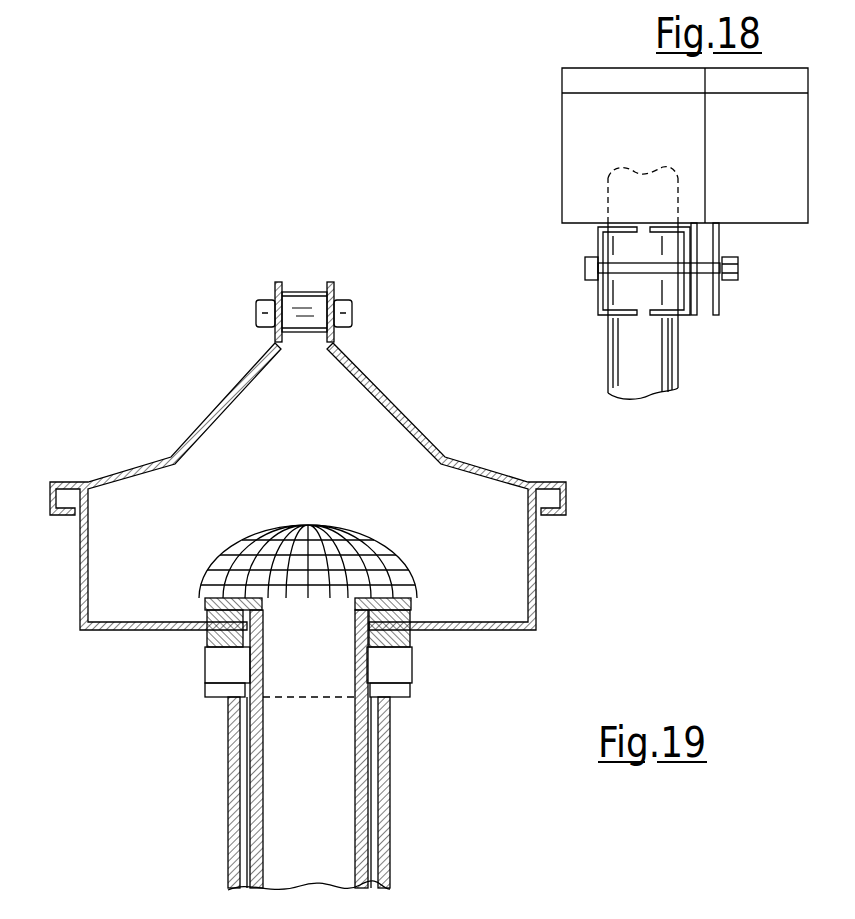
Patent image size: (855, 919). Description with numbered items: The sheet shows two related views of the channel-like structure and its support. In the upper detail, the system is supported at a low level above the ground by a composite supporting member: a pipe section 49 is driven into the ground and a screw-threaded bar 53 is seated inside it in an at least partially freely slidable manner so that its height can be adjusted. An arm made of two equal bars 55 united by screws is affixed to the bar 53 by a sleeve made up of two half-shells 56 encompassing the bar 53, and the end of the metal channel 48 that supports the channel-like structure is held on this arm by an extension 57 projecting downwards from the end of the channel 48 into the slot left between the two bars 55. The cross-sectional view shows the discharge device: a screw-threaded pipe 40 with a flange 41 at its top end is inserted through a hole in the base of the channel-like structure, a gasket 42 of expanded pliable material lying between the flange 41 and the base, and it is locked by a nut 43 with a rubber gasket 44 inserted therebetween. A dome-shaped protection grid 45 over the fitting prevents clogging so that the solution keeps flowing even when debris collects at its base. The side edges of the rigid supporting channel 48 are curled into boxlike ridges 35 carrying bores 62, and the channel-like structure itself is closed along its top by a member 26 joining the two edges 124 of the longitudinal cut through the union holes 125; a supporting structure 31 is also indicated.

In FIG. 19, the uniting member 26 is at (309, 286).
In FIG. 19, the support bracket 31 is at (396, 405).
In FIG. 19, the boxlike open ridge 35 is at (48, 508).
In FIG. 19, the screw-threaded pipe 40 is at (360, 791).
In FIG. 19, the flange 41 is at (392, 603).
In FIG. 19, the gasket 42 is at (407, 615).
In FIG. 19, the nut 43 is at (410, 666).
In FIG. 19, the rubber gasket 44 is at (207, 641).
In FIG. 19, the protection grid 45 is at (305, 536).
In FIG. 18, the rigid channel 48 is at (596, 150).
In FIG. 19, the rigid channel 48 is at (546, 575).
In FIG. 19, the pipe section 49 is at (388, 848).
In FIG. 18, the screw-threaded bar 53 is at (672, 350).
In FIG. 18, the bar 55 is at (719, 298).
In FIG. 18, the half-shell 56 is at (598, 296).
In FIG. 18, the extension 57 is at (702, 238).
In FIG. 19, the bore 62 is at (72, 482).
In FIG. 19, the edge 124 is at (277, 292).
In FIG. 19, the union hole 125 is at (283, 318).